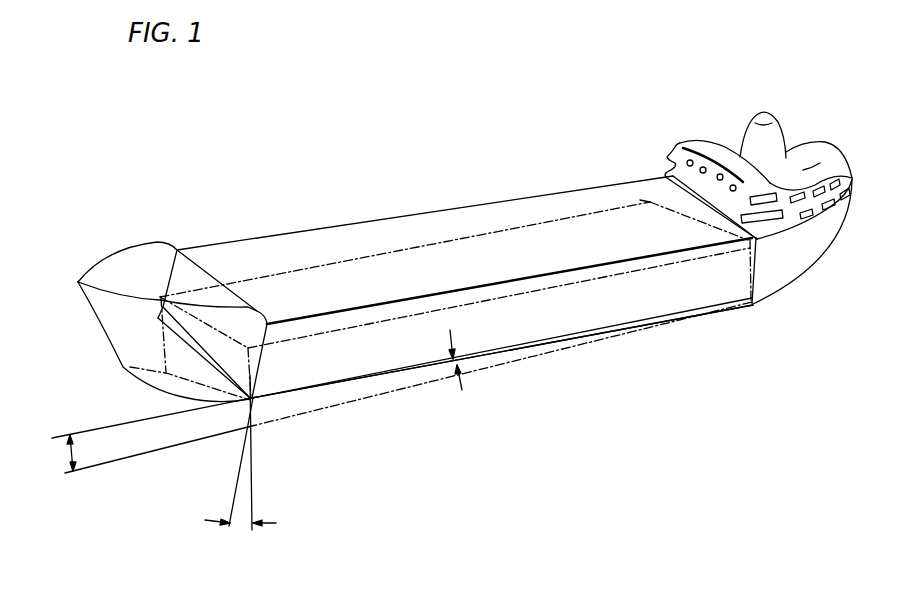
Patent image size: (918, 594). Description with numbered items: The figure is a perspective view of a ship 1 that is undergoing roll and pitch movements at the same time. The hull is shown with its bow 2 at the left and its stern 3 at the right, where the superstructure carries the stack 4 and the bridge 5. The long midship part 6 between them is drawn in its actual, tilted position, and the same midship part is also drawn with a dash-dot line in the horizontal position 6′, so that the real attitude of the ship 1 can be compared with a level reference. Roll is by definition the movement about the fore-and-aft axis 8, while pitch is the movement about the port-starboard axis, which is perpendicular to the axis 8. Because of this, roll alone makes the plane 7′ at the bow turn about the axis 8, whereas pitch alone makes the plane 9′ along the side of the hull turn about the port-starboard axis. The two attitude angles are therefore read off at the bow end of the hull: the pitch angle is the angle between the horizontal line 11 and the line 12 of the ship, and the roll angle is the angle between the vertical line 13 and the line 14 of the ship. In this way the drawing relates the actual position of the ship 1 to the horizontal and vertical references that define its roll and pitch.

The ship 1 is at (418, 206).
The bow 2 is at (128, 260).
The stern 3 is at (797, 248).
The stack 4 is at (785, 160).
The bridge 5 is at (702, 143).
The midship part 6 is at (637, 310).
The horizontal position of the midship part 6′ is at (332, 397).
The plane 7′ is at (215, 355).
The fore-and-aft axis 8 is at (140, 372).
The plane 9′ is at (388, 362).
The horizontal line 11 is at (115, 462).
The line of the ship 12 is at (100, 428).
The vertical line 13 is at (253, 478).
The line of the ship 14 is at (240, 477).